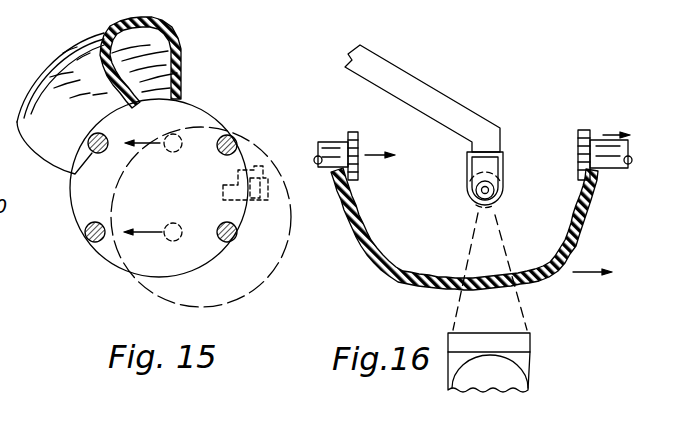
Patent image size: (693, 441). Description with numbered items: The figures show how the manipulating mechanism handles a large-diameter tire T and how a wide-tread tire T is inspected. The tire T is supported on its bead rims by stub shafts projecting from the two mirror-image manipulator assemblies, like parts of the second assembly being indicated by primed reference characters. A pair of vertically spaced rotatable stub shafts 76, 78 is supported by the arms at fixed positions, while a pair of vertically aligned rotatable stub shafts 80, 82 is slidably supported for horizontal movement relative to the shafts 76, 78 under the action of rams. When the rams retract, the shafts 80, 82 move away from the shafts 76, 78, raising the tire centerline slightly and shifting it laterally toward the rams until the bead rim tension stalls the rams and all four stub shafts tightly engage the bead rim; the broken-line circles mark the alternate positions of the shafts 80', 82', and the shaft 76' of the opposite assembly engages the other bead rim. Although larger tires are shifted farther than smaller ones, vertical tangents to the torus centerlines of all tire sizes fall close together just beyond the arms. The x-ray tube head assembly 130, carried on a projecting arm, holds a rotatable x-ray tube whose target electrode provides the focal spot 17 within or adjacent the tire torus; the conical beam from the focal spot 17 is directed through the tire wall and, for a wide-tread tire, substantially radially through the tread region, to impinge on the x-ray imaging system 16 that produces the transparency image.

In FIG. 15, the tire T is at (73, 73).
In FIG. 16, the tire T is at (373, 263).
In FIG. 15, the stub shaft 76 is at (245, 131).
In FIG. 16, the stub shaft 76 is at (336, 140).
In FIG. 16, the stub shaft 76' is at (603, 136).
In FIG. 15, the stub shaft 78 is at (234, 238).
In FIG. 15, the stub shaft 80 is at (74, 167).
In FIG. 15, the stub shaft 80' is at (162, 162).
In FIG. 15, the stub shaft 82 is at (80, 249).
In FIG. 15, the stub shaft 82' is at (162, 249).
In FIG. 15, the x-ray tube head assembly 130 is at (268, 200).
In FIG. 16, the x-ray tube head assembly 130 is at (505, 178).
In FIG. 15, the focal spot 17 is at (268, 158).
In FIG. 16, the focal spot 17 is at (503, 199).
In FIG. 16, the x-ray imaging system 16 is at (492, 387).